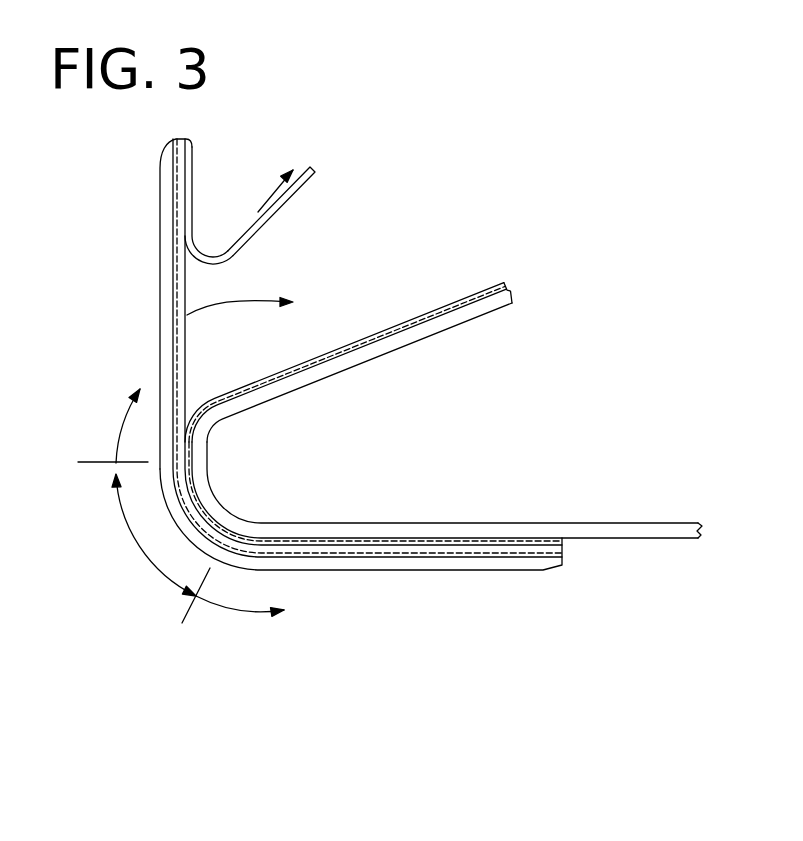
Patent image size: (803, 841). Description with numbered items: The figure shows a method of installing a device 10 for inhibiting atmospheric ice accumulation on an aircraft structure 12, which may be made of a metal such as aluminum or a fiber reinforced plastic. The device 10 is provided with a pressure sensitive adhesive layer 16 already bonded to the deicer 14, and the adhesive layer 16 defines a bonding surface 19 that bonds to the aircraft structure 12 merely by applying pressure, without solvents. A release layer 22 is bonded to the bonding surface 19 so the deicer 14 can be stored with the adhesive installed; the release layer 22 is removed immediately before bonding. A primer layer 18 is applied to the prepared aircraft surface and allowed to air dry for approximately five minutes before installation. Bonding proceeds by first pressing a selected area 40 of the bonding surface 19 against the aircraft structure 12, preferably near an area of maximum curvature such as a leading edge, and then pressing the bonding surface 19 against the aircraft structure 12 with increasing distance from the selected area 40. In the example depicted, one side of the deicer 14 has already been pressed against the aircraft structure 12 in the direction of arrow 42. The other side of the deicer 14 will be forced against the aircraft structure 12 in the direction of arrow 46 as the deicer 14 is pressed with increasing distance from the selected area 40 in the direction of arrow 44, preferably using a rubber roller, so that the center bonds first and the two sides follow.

The device 10 is at (141, 333).
The aircraft structure 12 is at (423, 335).
The deicer 14 is at (161, 203).
The pressure sensitive adhesive layer 16 is at (185, 235).
The second primer layer 18 is at (437, 310).
The bonding surface 19 is at (188, 347).
The release layer 22 is at (287, 200).
The selected area 40 is at (133, 540).
The arrow 42 is at (242, 610).
The arrow 44 is at (120, 425).
The arrow 46 is at (247, 303).